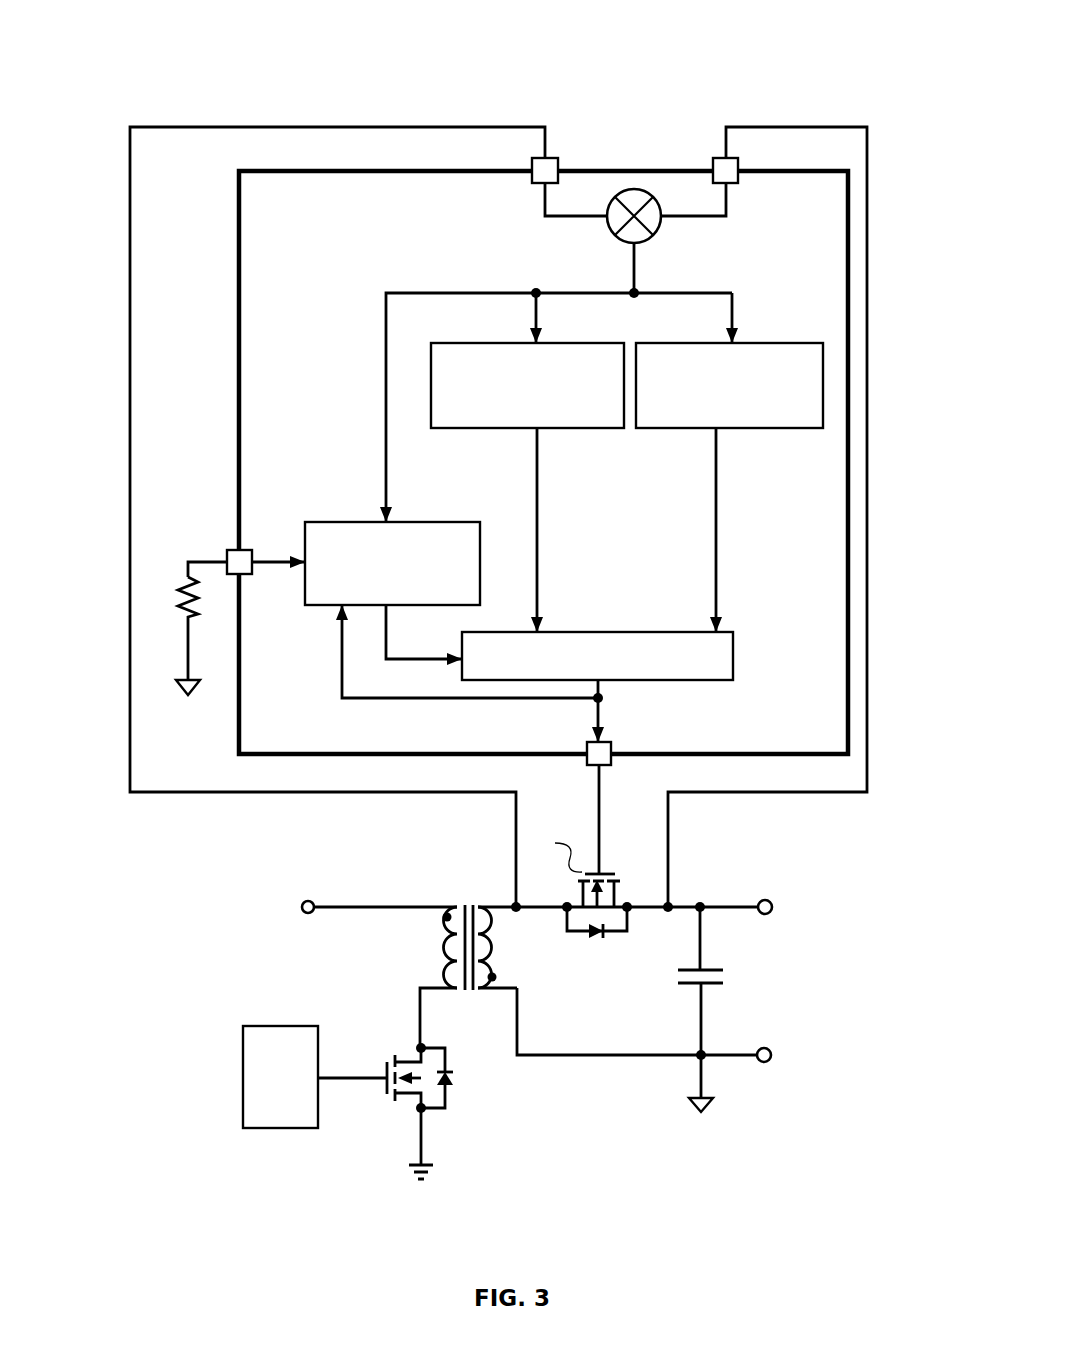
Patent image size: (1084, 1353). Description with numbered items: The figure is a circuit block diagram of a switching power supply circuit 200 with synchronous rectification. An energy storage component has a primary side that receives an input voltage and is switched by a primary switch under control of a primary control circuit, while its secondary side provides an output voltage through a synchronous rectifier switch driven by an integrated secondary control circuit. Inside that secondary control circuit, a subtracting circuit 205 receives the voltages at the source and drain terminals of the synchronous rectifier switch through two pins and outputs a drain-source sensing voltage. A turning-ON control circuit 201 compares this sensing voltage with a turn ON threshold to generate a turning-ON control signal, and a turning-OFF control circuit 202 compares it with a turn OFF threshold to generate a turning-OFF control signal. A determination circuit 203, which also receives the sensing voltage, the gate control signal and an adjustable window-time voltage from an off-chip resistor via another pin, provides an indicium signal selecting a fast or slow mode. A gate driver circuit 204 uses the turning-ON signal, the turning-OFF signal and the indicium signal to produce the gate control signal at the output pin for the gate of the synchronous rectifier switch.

The switching power supply circuit 200 is at (764, 40).
The turning-ON control circuit 201 is at (480, 343).
The turning-OFF control circuit 202 is at (766, 343).
The determination circuit 203 is at (340, 522).
The gate driver circuit 204 is at (735, 650).
The subtracting circuit 205 is at (658, 228).